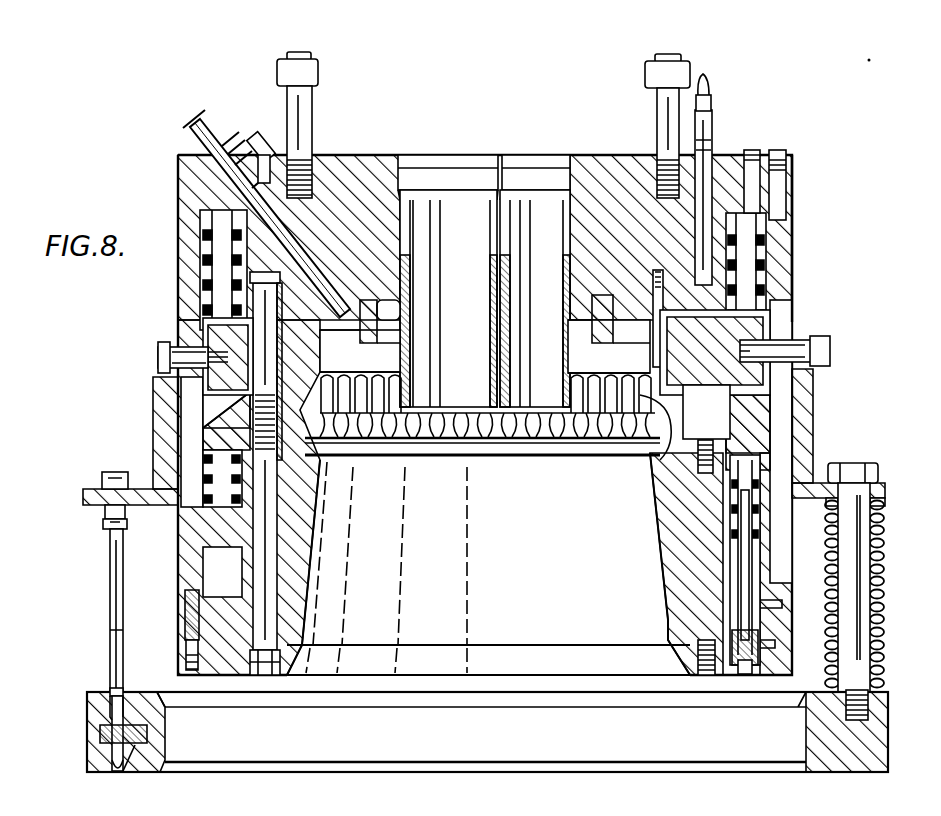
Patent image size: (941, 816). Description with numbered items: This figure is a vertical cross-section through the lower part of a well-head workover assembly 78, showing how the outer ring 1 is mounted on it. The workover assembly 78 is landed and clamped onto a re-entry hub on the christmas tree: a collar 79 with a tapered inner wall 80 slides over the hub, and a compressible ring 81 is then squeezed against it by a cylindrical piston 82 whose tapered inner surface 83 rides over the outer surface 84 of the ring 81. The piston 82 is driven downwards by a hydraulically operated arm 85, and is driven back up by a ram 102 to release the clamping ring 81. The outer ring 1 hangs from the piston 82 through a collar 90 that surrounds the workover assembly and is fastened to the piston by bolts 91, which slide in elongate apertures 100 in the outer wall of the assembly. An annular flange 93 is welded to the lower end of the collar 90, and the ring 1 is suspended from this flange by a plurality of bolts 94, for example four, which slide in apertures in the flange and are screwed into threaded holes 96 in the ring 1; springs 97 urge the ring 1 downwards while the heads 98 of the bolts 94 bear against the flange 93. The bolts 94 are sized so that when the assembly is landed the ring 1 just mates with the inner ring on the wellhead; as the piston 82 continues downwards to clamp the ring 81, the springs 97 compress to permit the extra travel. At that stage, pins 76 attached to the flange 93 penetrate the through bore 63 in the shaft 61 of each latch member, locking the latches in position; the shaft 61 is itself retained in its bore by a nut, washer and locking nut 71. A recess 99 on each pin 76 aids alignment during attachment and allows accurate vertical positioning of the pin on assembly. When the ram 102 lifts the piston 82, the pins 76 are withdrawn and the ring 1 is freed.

The outer ring 1 is at (88, 764).
The shaft 61 is at (100, 740).
The through bore 63 is at (133, 770).
The locking nut 71 is at (118, 772).
The pin 76 is at (115, 656).
The workover assembly 78 is at (818, 262).
The collar 79 is at (687, 658).
The tapered inner wall 80 is at (650, 640).
The compressible ring 81 is at (650, 440).
The cylindrical piston 82 is at (205, 358).
The tapered inner surface 83 is at (603, 440).
The outer surface 84 is at (688, 440).
The hydraulically operated arm 85 is at (226, 287).
The collar 90 is at (165, 458).
The bolts 91 is at (158, 356).
The annular flange 93 is at (92, 502).
The bolts 94 is at (858, 588).
The threaded holes 96 is at (870, 695).
The springs 97 is at (882, 622).
The heads 98 is at (862, 468).
The recess 99 is at (112, 693).
The elongate apertures 100 is at (193, 393).
The ram 102 is at (227, 427).